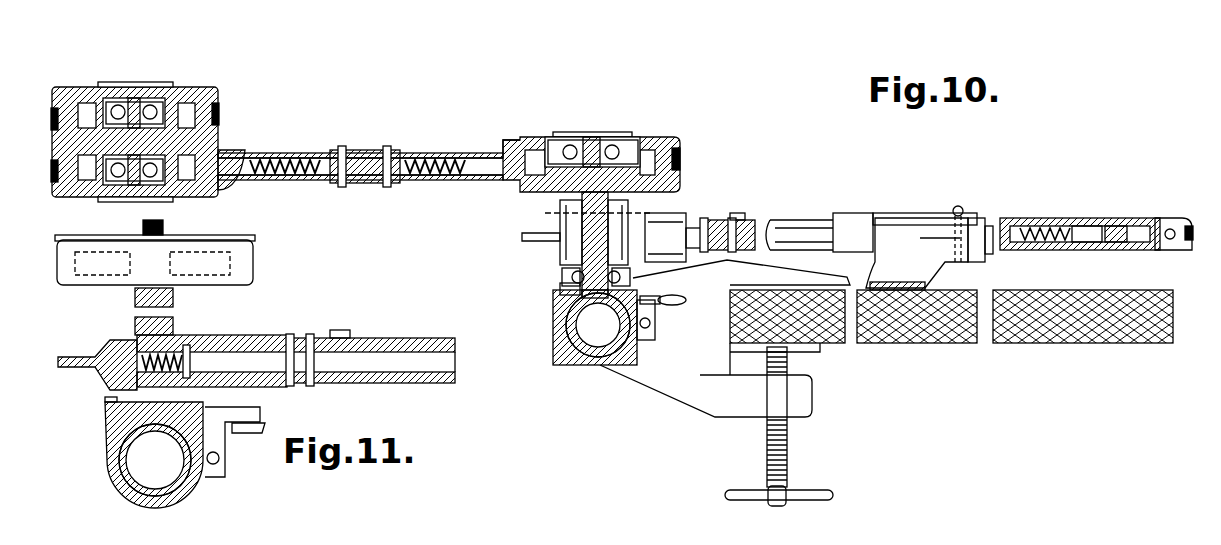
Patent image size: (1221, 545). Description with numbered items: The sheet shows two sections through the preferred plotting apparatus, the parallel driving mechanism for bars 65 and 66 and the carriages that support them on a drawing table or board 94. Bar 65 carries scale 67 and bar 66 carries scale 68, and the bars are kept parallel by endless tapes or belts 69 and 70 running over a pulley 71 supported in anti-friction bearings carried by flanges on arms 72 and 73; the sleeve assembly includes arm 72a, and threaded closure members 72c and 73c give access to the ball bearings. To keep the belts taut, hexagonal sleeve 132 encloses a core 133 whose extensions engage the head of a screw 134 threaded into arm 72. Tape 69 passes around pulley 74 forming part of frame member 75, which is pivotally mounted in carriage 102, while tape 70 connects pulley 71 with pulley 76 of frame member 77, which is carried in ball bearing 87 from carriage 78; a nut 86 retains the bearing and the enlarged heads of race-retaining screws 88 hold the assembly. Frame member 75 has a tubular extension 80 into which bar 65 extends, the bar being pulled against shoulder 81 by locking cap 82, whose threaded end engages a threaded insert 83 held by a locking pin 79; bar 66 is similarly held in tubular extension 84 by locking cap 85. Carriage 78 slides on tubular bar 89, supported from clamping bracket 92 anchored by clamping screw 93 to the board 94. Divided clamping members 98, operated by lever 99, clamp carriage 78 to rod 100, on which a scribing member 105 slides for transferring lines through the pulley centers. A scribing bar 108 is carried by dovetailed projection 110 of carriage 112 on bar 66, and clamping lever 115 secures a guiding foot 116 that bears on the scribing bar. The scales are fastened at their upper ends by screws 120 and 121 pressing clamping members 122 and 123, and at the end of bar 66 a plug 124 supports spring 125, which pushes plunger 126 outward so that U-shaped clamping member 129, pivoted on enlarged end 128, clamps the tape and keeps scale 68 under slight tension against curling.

In FIG. 11, the bar 65 is at (396, 384).
In FIG. 10, the bar 66 is at (796, 225).
In FIG. 11, the scale 67 is at (410, 340).
In FIG. 10, the scale 68 is at (1150, 220).
In FIG. 10, the endless tape or belt 69 is at (52, 118).
In FIG. 10, the endless tape or belt 70 is at (56, 186).
In FIG. 10, the pulley 71 is at (200, 146).
In FIG. 10, the arm 72 is at (230, 186).
In FIG. 10, the arm 72a is at (508, 142).
In FIG. 10, the threaded closure member 72c is at (120, 198).
In FIG. 10, the arm 73 is at (190, 98).
In FIG. 10, the threaded closure member 73c is at (148, 86).
In FIG. 11, the pulley 74 is at (245, 268).
In FIG. 11, the frame member 75 is at (168, 318).
In FIG. 10, the pulley 76 is at (520, 190).
In FIG. 10, the frame member 77 is at (590, 205).
In FIG. 10, the carriage 78 is at (565, 282).
In FIG. 11, the locking pin 79 is at (188, 346).
In FIG. 11, the tubular extension 80 is at (240, 336).
In FIG. 11, the shoulder 81 is at (138, 330).
In FIG. 11, the locking cap 82 is at (68, 366).
In FIG. 11, the threaded insert 83 is at (190, 357).
In FIG. 10, the tubular extension 84 is at (664, 228).
In FIG. 10, the locking cap 85 is at (530, 236).
In FIG. 10, the nut 86 is at (575, 296).
In FIG. 10, the ball bearing 87 is at (575, 288).
In FIG. 10, the race-retaining screw 88 is at (570, 270).
In FIG. 11, the race-retaining screw 88 is at (108, 402).
In FIG. 10, the tubular bar 89 is at (575, 332).
In FIG. 11, the tubular bar 89 is at (168, 506).
In FIG. 10, the clamping bracket 92 is at (690, 388).
In FIG. 10, the clamping screw 93 is at (790, 445).
In FIG. 10, the drawing table or board 94 is at (925, 338).
In FIG. 10, the divided clamping members 98 is at (652, 318).
In FIG. 10, the lever 99 is at (674, 298).
In FIG. 11, the lever 99 is at (240, 433).
In FIG. 10, the rod 100 is at (646, 330).
In FIG. 11, the rod 100 is at (214, 465).
In FIG. 11, the carriage 102 is at (110, 452).
In FIG. 11, the scribing member 105 is at (238, 445).
In FIG. 10, the scribing bar 108 is at (905, 283).
In FIG. 10, the dovetailed projection 110 is at (848, 236).
In FIG. 10, the carriage 112 is at (870, 220).
In FIG. 10, the clamping lever 115 is at (960, 206).
In FIG. 10, the guiding foot 116 is at (900, 230).
In FIG. 11, the screw 120 is at (310, 386).
In FIG. 10, the screw 121 is at (703, 224).
In FIG. 11, the clamping member 122 is at (322, 338).
In FIG. 10, the clamping member 123 is at (742, 215).
In FIG. 10, the plug 124 is at (1018, 238).
In FIG. 10, the spring 125 is at (1050, 224).
In FIG. 10, the plunger 126 is at (1088, 230).
In FIG. 10, the enlarged end 128 is at (1168, 242).
In FIG. 10, the U-shaped clamping member 129 is at (1190, 224).
In FIG. 10, the hexagonal sleeve 132 is at (376, 180).
In FIG. 10, the core 133 is at (342, 186).
In FIG. 10, the screw 134 is at (302, 181).